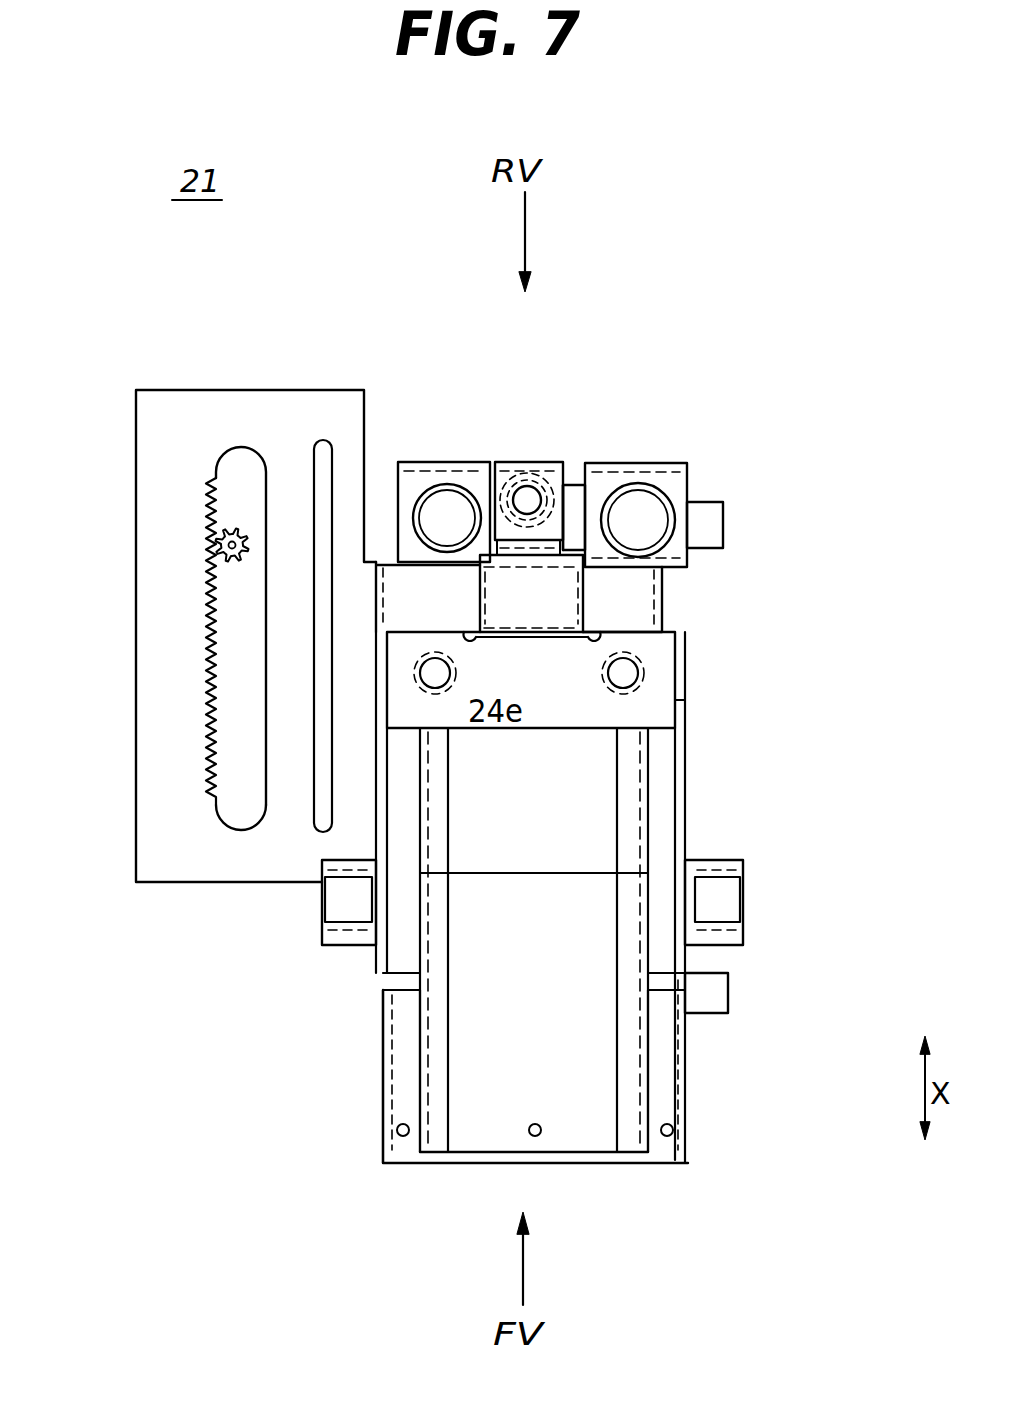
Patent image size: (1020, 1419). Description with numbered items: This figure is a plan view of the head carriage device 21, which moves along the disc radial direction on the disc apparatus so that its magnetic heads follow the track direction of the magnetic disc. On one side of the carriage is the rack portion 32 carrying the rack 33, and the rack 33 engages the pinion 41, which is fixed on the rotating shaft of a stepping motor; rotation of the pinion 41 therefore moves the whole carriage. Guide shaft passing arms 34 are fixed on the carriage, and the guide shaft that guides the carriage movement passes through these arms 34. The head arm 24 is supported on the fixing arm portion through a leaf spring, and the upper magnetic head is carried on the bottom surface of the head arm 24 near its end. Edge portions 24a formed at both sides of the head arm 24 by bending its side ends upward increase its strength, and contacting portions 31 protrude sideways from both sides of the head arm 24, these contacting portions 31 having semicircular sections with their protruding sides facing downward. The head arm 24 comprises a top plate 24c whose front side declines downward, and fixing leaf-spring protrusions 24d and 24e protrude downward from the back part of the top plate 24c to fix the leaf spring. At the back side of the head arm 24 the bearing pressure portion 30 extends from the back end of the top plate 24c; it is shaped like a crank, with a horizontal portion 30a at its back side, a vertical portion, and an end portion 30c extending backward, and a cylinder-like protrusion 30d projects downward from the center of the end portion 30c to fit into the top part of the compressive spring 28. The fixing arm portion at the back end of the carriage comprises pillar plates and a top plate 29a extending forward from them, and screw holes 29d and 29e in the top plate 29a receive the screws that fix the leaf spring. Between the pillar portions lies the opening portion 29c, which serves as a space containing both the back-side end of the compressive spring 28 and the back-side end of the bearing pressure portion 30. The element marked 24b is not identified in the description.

The head carriage device 21 is at (250, 636).
The head arm 24 is at (688, 690).
The edge portion 24a is at (688, 768).
The lower portion 24b is at (396, 1032).
The top plate 24c is at (592, 1138).
The fixing leaf-spring protrusion 24d is at (628, 672).
The fixing leaf-spring protrusion 24e is at (468, 705).
The compressive spring 28 is at (545, 495).
The top plate 29a is at (472, 500).
The opening portion 29c is at (574, 505).
The screw hole 29d is at (652, 508).
The screw hole 29e is at (438, 505).
The bearing pressure portion 30 is at (571, 593).
The horizontal portion 30a is at (570, 584).
The end portion 30c is at (566, 470).
The protrusion 30d is at (522, 498).
The contacting portion 31 is at (328, 907).
The rack portion 32 is at (203, 390).
The rack 33 is at (210, 543).
The guide shaft passing arm 34 is at (710, 530).
The pinion 41 is at (224, 537).